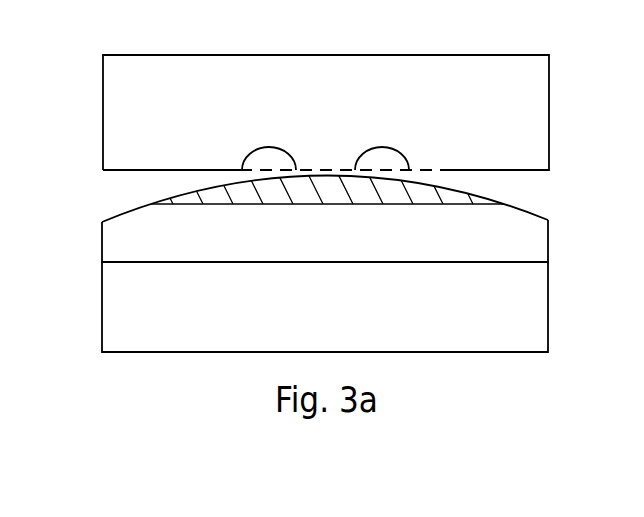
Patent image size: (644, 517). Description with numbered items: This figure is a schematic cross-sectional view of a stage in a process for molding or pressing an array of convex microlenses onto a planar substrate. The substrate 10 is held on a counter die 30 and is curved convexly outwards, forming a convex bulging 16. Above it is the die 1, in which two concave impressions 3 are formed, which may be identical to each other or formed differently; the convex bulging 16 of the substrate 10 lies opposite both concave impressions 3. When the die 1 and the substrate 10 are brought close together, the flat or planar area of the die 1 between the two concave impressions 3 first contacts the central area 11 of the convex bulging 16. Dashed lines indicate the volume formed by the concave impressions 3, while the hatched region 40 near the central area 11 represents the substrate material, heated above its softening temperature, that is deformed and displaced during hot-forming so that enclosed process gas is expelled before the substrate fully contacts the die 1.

The die 1 is at (543, 72).
The central area 11 is at (324, 172).
The concave impressions 3 is at (387, 157).
The convex bulging 16 is at (522, 208).
The region 40 is at (177, 197).
The substrate 10 is at (537, 237).
The counter die 30 is at (538, 308).